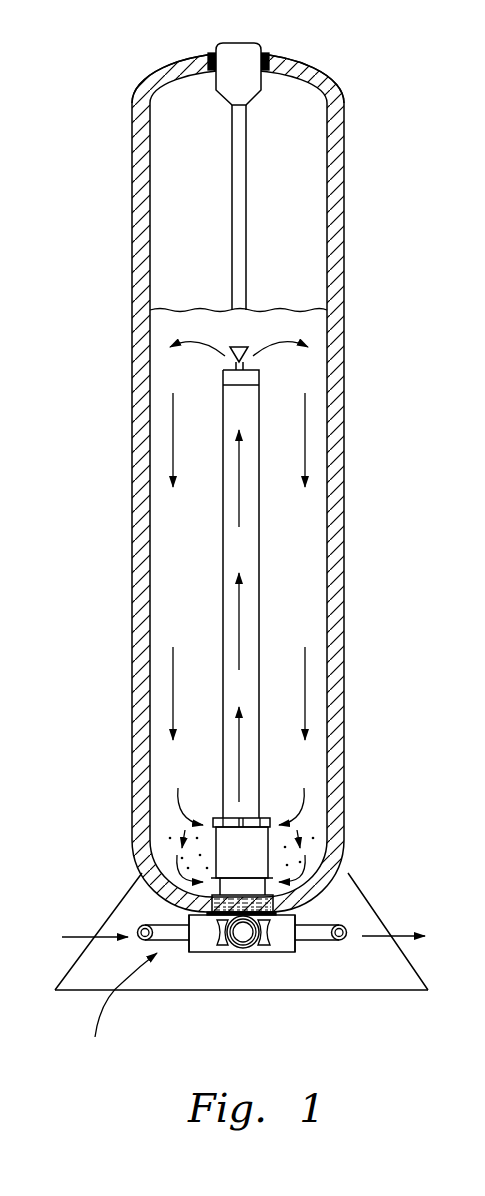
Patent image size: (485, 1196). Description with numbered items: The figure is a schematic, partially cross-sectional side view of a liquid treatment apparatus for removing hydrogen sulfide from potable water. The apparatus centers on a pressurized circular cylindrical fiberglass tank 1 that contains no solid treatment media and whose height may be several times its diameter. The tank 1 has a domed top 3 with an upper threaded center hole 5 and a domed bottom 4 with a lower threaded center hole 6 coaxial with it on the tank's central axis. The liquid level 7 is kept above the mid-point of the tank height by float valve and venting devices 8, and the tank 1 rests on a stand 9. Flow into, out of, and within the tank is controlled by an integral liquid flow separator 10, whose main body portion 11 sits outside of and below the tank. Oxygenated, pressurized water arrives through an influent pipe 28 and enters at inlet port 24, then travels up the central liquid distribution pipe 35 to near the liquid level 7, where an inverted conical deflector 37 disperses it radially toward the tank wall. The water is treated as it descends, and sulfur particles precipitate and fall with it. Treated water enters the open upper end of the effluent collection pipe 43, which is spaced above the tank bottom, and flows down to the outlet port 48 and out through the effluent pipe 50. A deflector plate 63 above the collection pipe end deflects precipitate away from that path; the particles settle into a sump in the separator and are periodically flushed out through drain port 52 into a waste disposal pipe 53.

The tank 1 is at (342, 137).
The domed top 3 is at (325, 72).
The upper threaded center hole 5 is at (273, 53).
The float valve and venting devices 8 is at (235, 101).
The liquid level 7 is at (304, 310).
The inverted conical deflector 37 is at (240, 347).
The liquid distribution pipe 35 is at (262, 548).
The deflector plate 63 is at (262, 817).
The effluent collection pipe 43 is at (238, 857).
The lower threaded center hole 6 is at (277, 907).
The domed bottom 4 is at (137, 873).
The stand 9 is at (57, 988).
The integral liquid flow separator 10 is at (117, 1012).
The influent pipe 28 is at (157, 923).
The effluent pipe 50 is at (345, 923).
The main body portion 11 is at (280, 952).
The inlet port 24 is at (187, 952).
The outlet port 48 is at (298, 948).
The drain port 52 is at (213, 940).
The waste disposal pipe 53 is at (243, 942).